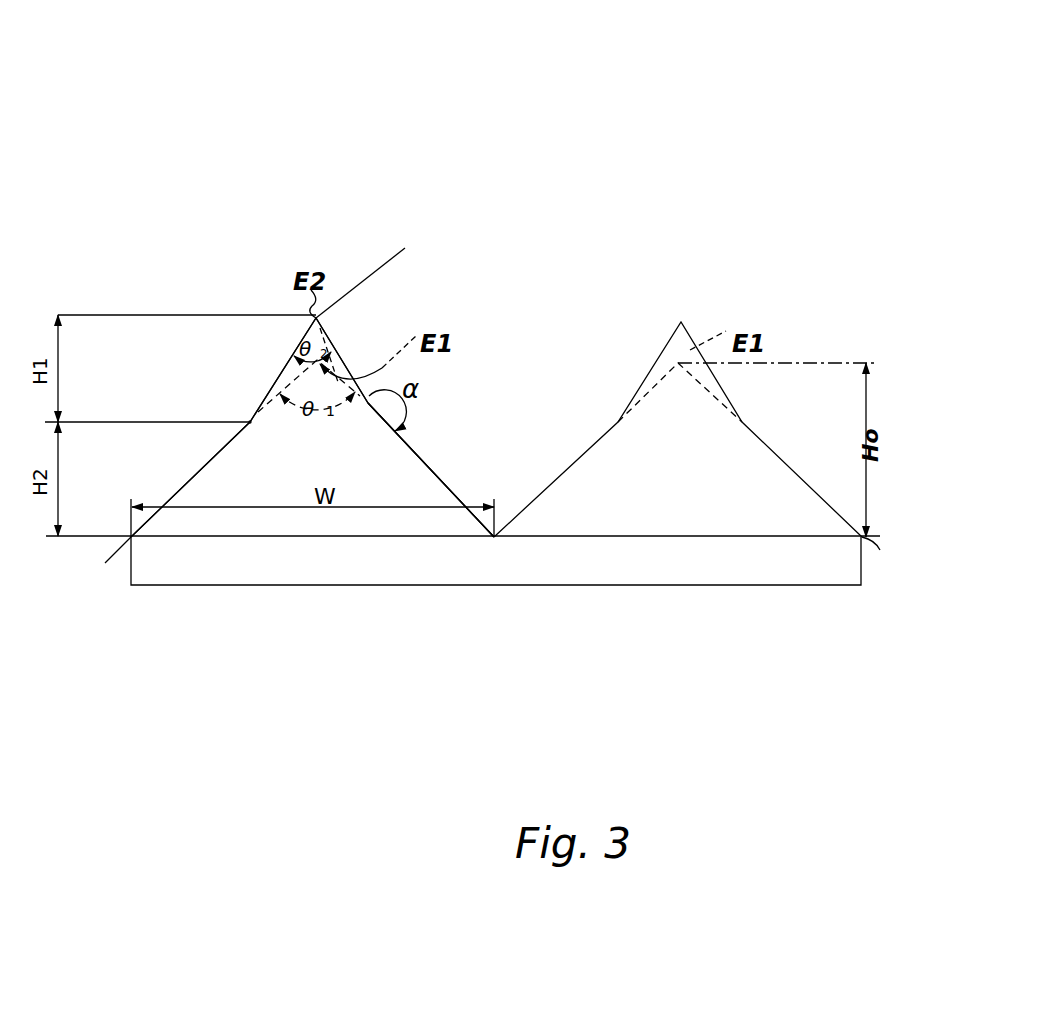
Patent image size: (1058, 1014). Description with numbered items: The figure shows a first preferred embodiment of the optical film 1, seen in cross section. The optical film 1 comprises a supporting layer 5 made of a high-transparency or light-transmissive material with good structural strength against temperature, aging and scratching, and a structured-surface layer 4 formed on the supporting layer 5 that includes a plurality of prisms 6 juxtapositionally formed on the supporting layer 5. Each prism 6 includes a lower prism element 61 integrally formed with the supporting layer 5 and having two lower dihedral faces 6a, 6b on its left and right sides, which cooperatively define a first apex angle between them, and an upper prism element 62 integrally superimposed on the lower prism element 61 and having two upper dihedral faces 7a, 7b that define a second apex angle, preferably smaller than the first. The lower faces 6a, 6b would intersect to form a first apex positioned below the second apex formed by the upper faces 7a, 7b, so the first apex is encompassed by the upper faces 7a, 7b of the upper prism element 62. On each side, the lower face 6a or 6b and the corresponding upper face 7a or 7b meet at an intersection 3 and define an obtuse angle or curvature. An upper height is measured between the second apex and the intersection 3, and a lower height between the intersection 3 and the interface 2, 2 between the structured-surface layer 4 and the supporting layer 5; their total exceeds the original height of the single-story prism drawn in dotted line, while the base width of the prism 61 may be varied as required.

The optical film 1 is at (543, 40).
The interface 2 is at (487, 564).
The intersection 3 is at (249, 420).
The structured-surface layer 4 is at (693, 237).
The supporting layer 5 is at (588, 563).
The prism 6 is at (485, 383).
The lower dihedral face 6a is at (196, 476).
The lower dihedral face 6b is at (418, 458).
The upper dihedral face 7a is at (282, 370).
The upper dihedral face 7b is at (338, 353).
The lower prism element 61 is at (413, 487).
The upper prism element 62 is at (382, 271).